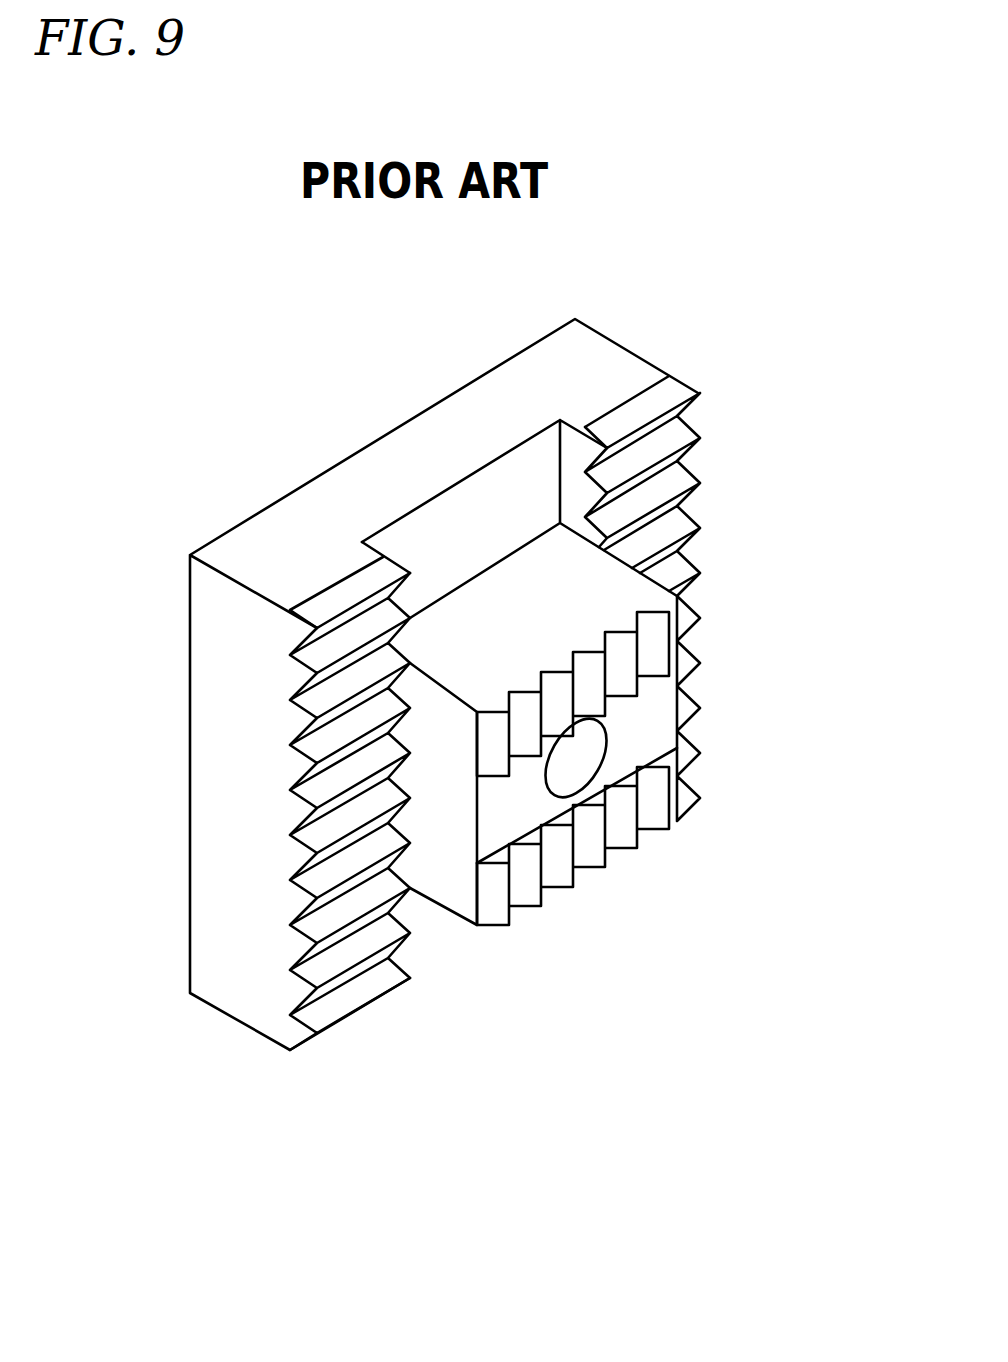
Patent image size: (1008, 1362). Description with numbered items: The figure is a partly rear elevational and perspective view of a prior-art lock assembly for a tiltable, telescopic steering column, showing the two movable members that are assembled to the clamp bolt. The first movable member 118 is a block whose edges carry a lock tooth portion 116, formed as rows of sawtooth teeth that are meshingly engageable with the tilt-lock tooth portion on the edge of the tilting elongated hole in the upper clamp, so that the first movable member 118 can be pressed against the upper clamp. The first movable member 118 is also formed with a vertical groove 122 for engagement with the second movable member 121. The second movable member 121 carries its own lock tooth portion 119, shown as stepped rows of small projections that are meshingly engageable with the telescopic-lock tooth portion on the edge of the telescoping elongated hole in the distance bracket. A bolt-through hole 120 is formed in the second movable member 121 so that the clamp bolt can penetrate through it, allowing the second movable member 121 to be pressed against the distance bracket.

The lock tooth portion 116 is at (655, 470).
The first movable member 118 is at (308, 530).
The lock tooth portion 119 is at (637, 655).
The bolt-through hole 120 is at (588, 750).
The second movable member 121 is at (453, 870).
The vertical groove 122 is at (476, 540).